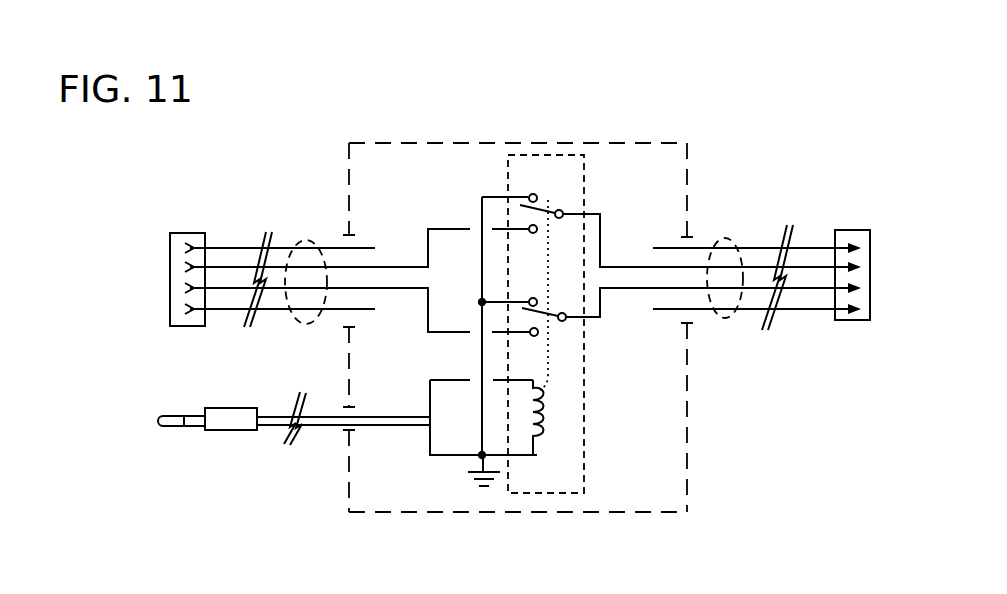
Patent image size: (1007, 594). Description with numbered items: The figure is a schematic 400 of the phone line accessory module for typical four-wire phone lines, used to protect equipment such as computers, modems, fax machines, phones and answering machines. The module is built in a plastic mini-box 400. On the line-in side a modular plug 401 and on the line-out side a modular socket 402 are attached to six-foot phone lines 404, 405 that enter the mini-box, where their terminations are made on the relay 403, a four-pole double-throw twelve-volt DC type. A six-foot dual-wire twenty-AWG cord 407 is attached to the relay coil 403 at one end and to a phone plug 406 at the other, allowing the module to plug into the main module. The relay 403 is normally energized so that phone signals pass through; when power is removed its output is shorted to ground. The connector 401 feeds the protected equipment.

The plastic mini-box 400 is at (478, 141).
The plug 401 is at (202, 326).
The socket 402 is at (857, 321).
The relay 403 is at (585, 386).
The phone line 404 is at (300, 242).
The phone line 405 is at (735, 246).
The phone plug 406 is at (218, 431).
The two conductor line 407 is at (328, 429).